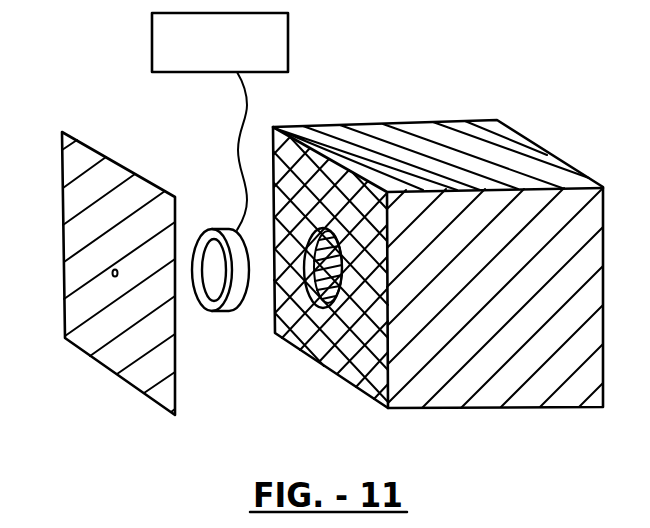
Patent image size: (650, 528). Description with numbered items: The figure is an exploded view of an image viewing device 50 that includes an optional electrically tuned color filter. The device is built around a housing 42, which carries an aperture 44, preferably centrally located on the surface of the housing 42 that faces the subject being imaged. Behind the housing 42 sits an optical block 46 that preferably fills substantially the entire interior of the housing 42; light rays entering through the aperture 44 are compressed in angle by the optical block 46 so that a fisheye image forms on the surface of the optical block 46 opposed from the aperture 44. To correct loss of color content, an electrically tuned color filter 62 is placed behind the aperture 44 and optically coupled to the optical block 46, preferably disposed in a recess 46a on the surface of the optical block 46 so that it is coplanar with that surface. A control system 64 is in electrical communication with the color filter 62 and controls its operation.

The housing 42 is at (79, 142).
The aperture 44 is at (112, 277).
The optical block 46 is at (488, 312).
The recess 46a is at (316, 302).
The image viewing device 50 is at (244, 441).
The electrically tuned color filter 62 is at (221, 223).
The control system 64 is at (220, 121).